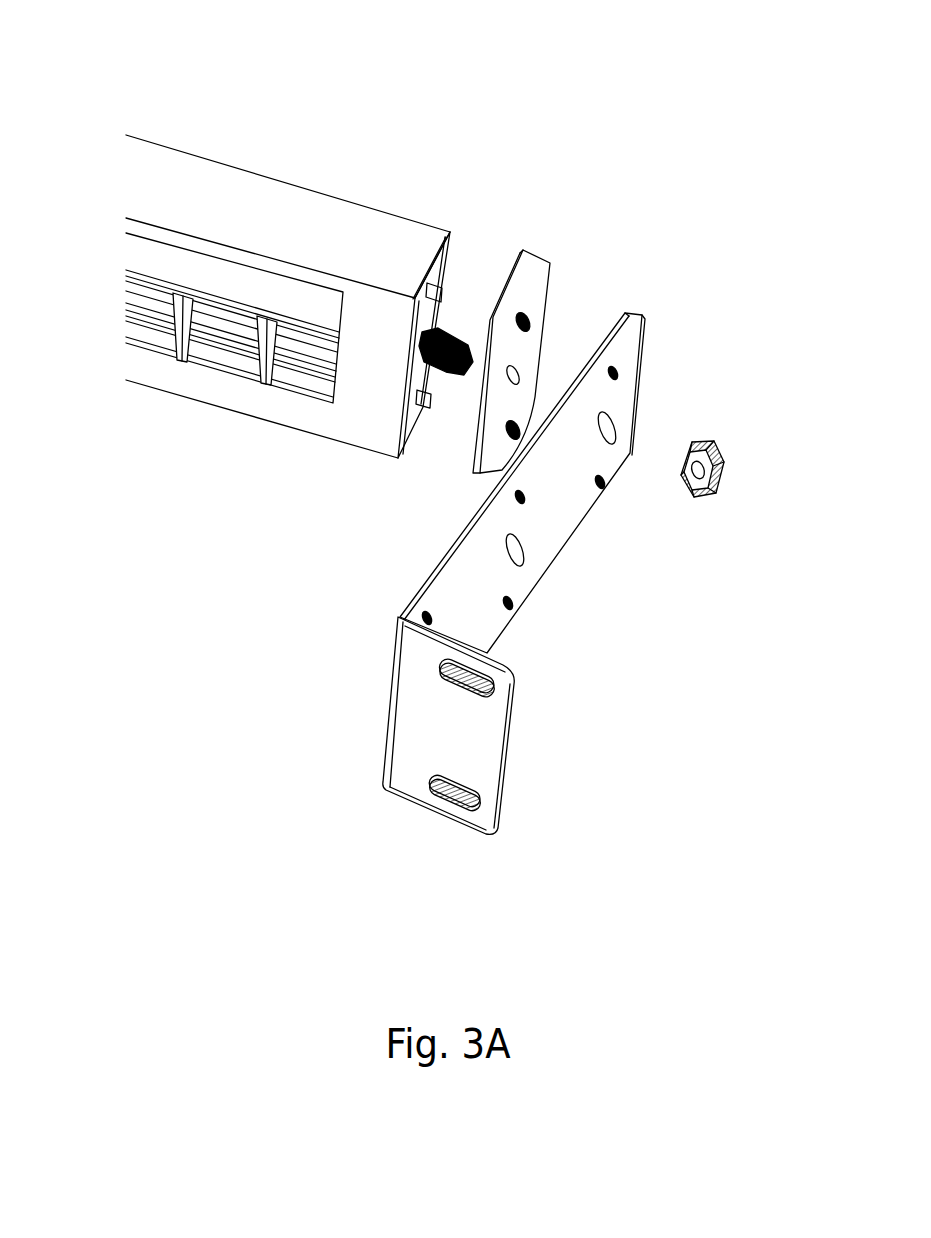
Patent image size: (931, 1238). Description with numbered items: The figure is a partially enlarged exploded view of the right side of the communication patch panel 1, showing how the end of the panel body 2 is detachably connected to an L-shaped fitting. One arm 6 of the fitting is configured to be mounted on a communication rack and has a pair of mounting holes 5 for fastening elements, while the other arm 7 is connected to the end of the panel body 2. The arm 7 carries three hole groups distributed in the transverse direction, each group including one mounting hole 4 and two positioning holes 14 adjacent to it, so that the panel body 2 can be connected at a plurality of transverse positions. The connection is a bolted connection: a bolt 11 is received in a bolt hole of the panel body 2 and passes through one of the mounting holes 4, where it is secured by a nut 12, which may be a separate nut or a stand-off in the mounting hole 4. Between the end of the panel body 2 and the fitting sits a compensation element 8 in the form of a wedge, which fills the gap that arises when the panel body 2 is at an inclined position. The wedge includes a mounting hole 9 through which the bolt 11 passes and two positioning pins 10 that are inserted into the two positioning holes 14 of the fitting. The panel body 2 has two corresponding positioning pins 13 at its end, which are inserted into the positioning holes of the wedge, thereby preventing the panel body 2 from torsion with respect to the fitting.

The communication patch panel 1 is at (193, 173).
The panel body 2 is at (330, 222).
The mounting hole 4 is at (612, 425).
The mounting hole 5 is at (495, 692).
The arm 6 is at (420, 743).
The arm 7 is at (617, 450).
The compensation element 8 is at (530, 265).
The mounting hole 9 is at (507, 383).
The positioning pin 10 is at (535, 318).
The bolt 11 is at (452, 340).
The nut 12 is at (706, 460).
The positioning pin 13 is at (418, 400).
The positioning hole 14 is at (617, 373).